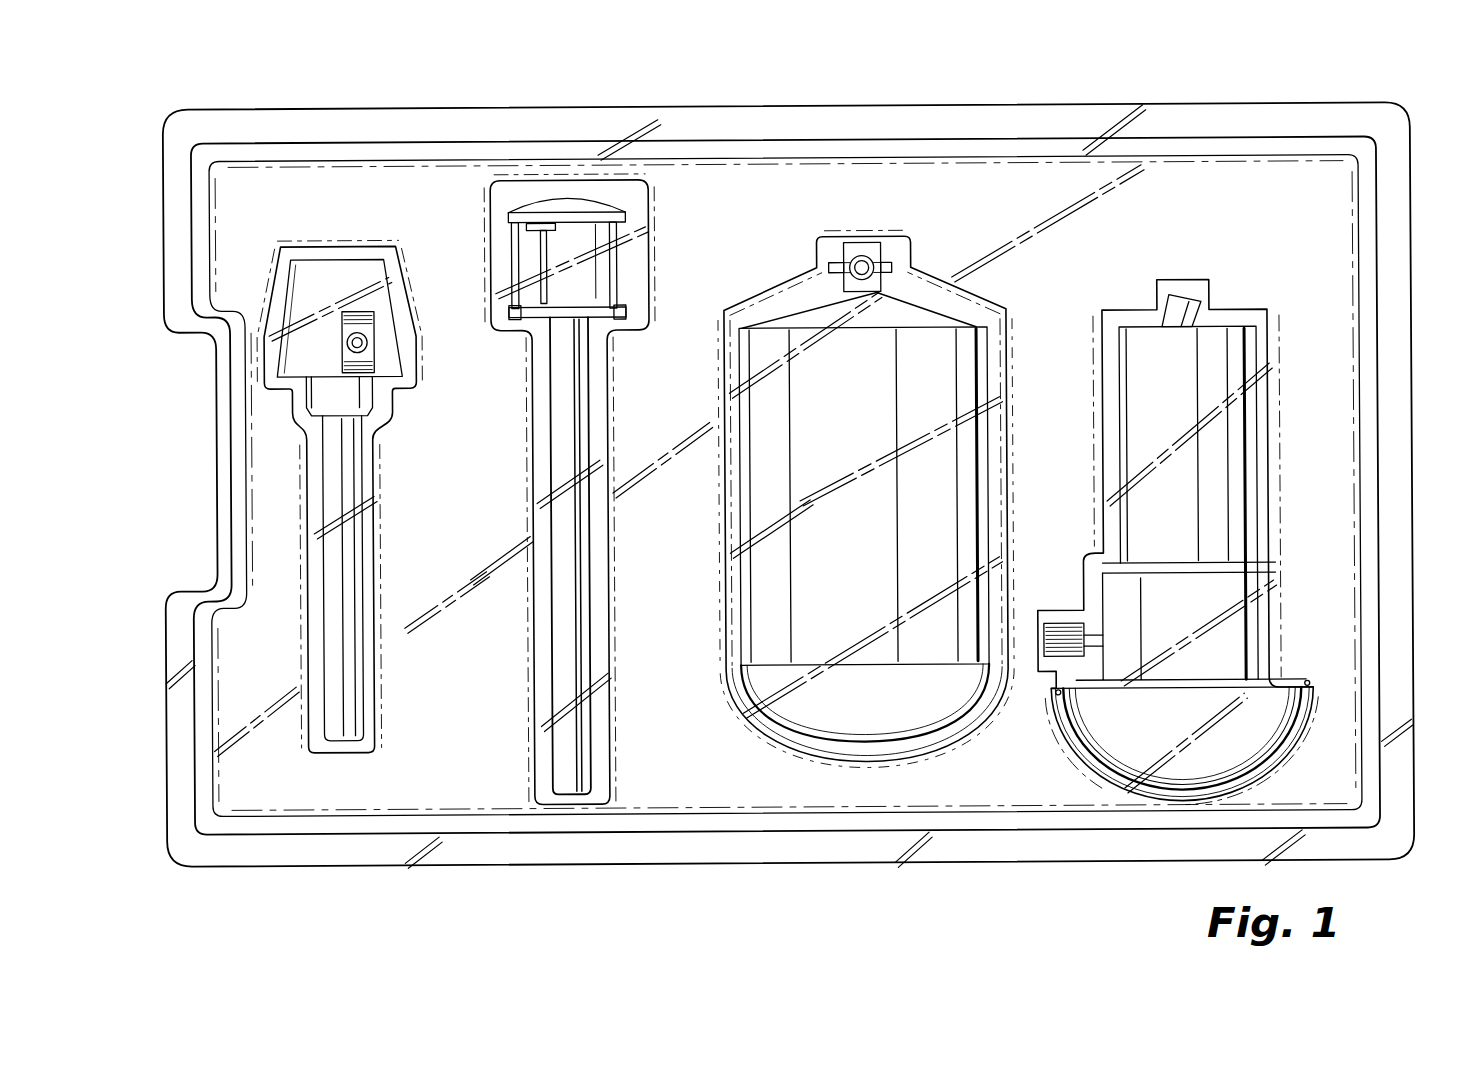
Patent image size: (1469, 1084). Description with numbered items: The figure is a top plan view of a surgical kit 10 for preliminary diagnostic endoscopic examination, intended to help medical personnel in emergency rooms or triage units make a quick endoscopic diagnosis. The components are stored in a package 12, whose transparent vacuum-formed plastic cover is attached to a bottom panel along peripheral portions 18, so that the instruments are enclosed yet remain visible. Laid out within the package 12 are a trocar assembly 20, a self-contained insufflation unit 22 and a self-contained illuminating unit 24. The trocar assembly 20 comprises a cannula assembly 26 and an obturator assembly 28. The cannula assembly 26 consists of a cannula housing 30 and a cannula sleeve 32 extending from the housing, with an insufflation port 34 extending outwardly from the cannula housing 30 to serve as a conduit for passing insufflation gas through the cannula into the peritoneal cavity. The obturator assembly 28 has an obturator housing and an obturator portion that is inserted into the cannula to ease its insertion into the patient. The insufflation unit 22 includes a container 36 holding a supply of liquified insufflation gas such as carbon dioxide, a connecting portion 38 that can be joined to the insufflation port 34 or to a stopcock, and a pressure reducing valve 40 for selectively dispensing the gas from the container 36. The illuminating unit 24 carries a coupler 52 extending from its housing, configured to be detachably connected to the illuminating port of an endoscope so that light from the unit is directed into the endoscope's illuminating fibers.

The surgical kit 10 is at (814, 488).
The package 12 is at (253, 868).
The peripheral portions 18 is at (1380, 120).
The trocar assembly 20 is at (425, 207).
The self-contained insufflation unit 22 is at (735, 719).
The self-contained illuminating unit 24 is at (1282, 492).
The cannula assembly 26 is at (293, 539).
The obturator assembly 28 is at (560, 663).
The cannula housing 30 is at (300, 310).
The cannula sleeve 32 is at (353, 600).
The insufflation port 34 is at (352, 328).
The container 36 is at (872, 653).
The connecting portion 38 is at (840, 248).
The pressure reducing valve 40 is at (880, 293).
The coupler 52 is at (1190, 303).